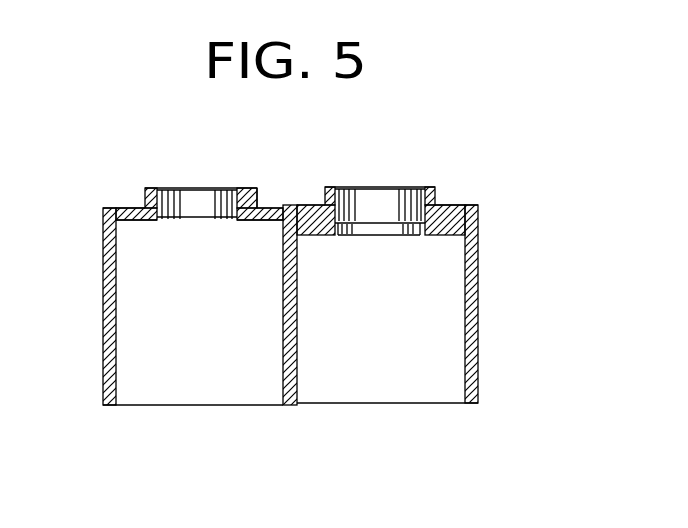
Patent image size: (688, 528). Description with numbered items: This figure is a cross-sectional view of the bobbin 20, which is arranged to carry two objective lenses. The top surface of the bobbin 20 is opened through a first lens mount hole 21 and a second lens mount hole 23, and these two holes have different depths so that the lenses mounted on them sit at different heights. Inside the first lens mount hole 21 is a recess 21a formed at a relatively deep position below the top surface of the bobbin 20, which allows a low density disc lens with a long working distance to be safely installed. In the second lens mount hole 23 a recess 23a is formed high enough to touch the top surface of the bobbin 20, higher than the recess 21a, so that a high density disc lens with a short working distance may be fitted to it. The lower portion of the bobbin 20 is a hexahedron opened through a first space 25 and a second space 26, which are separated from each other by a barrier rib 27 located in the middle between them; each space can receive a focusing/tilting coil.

The bobbin 20 is at (489, 192).
The first lens mount hole 21 is at (362, 195).
The recess 21a is at (407, 195).
The second lens mount hole 23 is at (170, 190).
The recess 23a is at (217, 190).
The first space 25 is at (378, 388).
The second space 26 is at (196, 388).
The barrier rib 27 is at (283, 392).